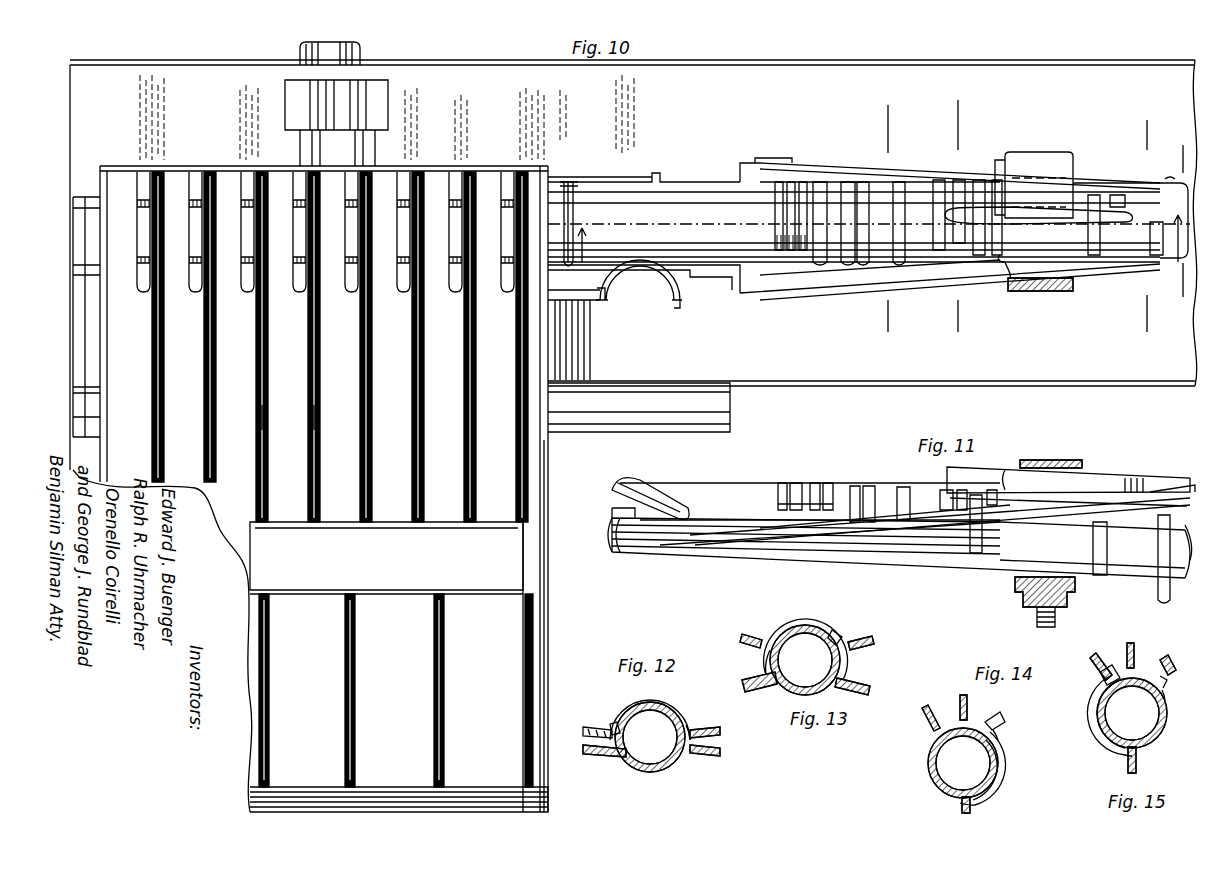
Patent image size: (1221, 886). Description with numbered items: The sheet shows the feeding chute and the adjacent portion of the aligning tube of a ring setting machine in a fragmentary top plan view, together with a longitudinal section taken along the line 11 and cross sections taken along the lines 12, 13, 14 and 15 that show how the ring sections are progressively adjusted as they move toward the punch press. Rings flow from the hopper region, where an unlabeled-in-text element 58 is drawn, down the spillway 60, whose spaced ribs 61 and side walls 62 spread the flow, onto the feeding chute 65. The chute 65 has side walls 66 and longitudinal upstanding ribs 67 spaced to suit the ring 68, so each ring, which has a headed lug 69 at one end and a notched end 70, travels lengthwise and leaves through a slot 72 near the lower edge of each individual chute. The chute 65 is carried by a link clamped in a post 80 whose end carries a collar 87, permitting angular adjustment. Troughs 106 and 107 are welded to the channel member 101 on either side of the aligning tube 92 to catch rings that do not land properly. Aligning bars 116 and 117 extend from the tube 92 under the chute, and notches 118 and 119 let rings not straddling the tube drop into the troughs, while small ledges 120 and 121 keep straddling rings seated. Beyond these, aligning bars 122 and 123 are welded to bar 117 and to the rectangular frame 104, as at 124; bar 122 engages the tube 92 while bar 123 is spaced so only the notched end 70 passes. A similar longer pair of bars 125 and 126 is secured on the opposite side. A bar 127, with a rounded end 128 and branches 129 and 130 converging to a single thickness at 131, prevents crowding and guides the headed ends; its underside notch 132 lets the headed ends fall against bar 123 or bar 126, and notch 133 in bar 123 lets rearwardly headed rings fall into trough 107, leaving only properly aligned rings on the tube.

In FIG. 10, the section line 11— 11 is at (600, 270).
In FIG. 10, the section line 12— 12 is at (878, 122).
In FIG. 10, the section line 13— 13 is at (948, 122).
In FIG. 10, the section line 14— 14 is at (1147, 138).
In FIG. 10, the section line 15— 15 is at (1173, 164).
In FIG. 10, the cross block 58 is at (508, 575).
In FIG. 10, the spillway 60 is at (508, 612).
In FIG. 10, the ribs 61 is at (342, 672).
In FIG. 10, the side walls 62 is at (530, 670).
In FIG. 10, the feeding chute 65 is at (545, 462).
In FIG. 10, the side walls 66 is at (546, 520).
In FIG. 10, the upstanding ribs 67 is at (312, 418).
In FIG. 10, the ring 68 is at (590, 197).
In FIG. 11, the ring 68 is at (638, 495).
In FIG. 12, the ring 68 is at (664, 704).
In FIG. 13, the ring 68 is at (813, 620).
In FIG. 14, the ring 68 is at (1006, 792).
In FIG. 15, the ring 68 is at (1091, 699).
In FIG. 12, the lug 69 is at (612, 720).
In FIG. 13, the lug 69 is at (838, 630).
In FIG. 14, the lug 69 is at (990, 720).
In FIG. 15, the lug 69 is at (1114, 665).
In FIG. 12, the notched end 70 is at (692, 724).
In FIG. 13, the notched end 70 is at (751, 660).
In FIG. 14, the notched end 70 is at (990, 806).
In FIG. 15, the notched end 70 is at (1120, 745).
In FIG. 10, the slot 72 is at (250, 295).
In FIG. 10, the post 80 is at (376, 138).
In FIG. 10, the collar 87 is at (372, 95).
In FIG. 10, the aligning tube 92 is at (712, 262).
In FIG. 11, the aligning tube 92 is at (695, 545).
In FIG. 12, the aligning tube 92 is at (632, 768).
In FIG. 13, the aligning tube 92 is at (805, 660).
In FIG. 14, the aligning tube 92 is at (930, 773).
In FIG. 15, the aligning tube 92 is at (1132, 713).
In FIG. 10, the channel member 101 is at (76, 190).
In FIG. 10, the rectangular frame 104 is at (1043, 152).
In FIG. 11, the rectangular frame 104 is at (1085, 460).
In FIG. 10, the trough 106 is at (808, 65).
In FIG. 10, the trough 107 is at (805, 383).
In FIG. 10, the aligning bar 116 is at (586, 170).
In FIG. 10, the aligning bar 117 is at (568, 300).
In FIG. 11, the aligning bar 117 is at (625, 540).
In FIG. 10, the notch 118 is at (710, 182).
In FIG. 10, the notch 119 is at (690, 300).
In FIG. 11, the notch 119 is at (700, 518).
In FIG. 10, the ledge 120 is at (668, 182).
In FIG. 12, the ledge 120 is at (585, 727).
In FIG. 10, the ledge 121 is at (748, 288).
In FIG. 10, the aligning bar 122 is at (795, 280).
In FIG. 11, the aligning bar 122 is at (905, 540).
In FIG. 12, the aligning bar 122 is at (700, 757).
In FIG. 13, the aligning bar 122 is at (866, 684).
In FIG. 10, the aligning bar 123 is at (812, 280).
In FIG. 11, the aligning bar 123 is at (888, 505).
In FIG. 12, the aligning bar 123 is at (718, 728).
In FIG. 13, the aligning bar 123 is at (868, 638).
In FIG. 14, the aligning bar 123 is at (1003, 725).
In FIG. 15, the aligning bar 123 is at (1170, 676).
In FIG. 10, the weld 124 is at (1010, 292).
In FIG. 11, the weld 124 is at (1013, 583).
In FIG. 10, the aligning bar 125 is at (858, 180).
In FIG. 12, the aligning bar 125 is at (597, 761).
In FIG. 13, the aligning bar 125 is at (763, 687).
In FIG. 14, the aligning bar 125 is at (958, 805).
In FIG. 15, the aligning bar 125 is at (1138, 757).
In FIG. 10, the aligning bar 126 is at (782, 158).
In FIG. 13, the aligning bar 126 is at (755, 632).
In FIG. 14, the aligning bar 126 is at (924, 725).
In FIG. 15, the aligning bar 126 is at (1088, 660).
In FIG. 10, the bar 127 is at (1002, 268).
In FIG. 11, the bar 127 is at (1149, 470).
In FIG. 14, the bar 127 is at (960, 705).
In FIG. 15, the bar 127 is at (1135, 645).
In FIG. 10, the rounded end 128 is at (945, 212).
In FIG. 10, the branch 129 is at (1080, 182).
In FIG. 10, the branch 130 is at (1150, 240).
In FIG. 11, the branch 130 is at (1008, 470).
In FIG. 10, the single thickness point 131 is at (1143, 215).
In FIG. 11, the notch 132 is at (1165, 490).
In FIG. 15, the notch 132 is at (1165, 657).
In FIG. 11, the notch 133 is at (1160, 522).
In FIG. 15, the notch 133 is at (1168, 695).